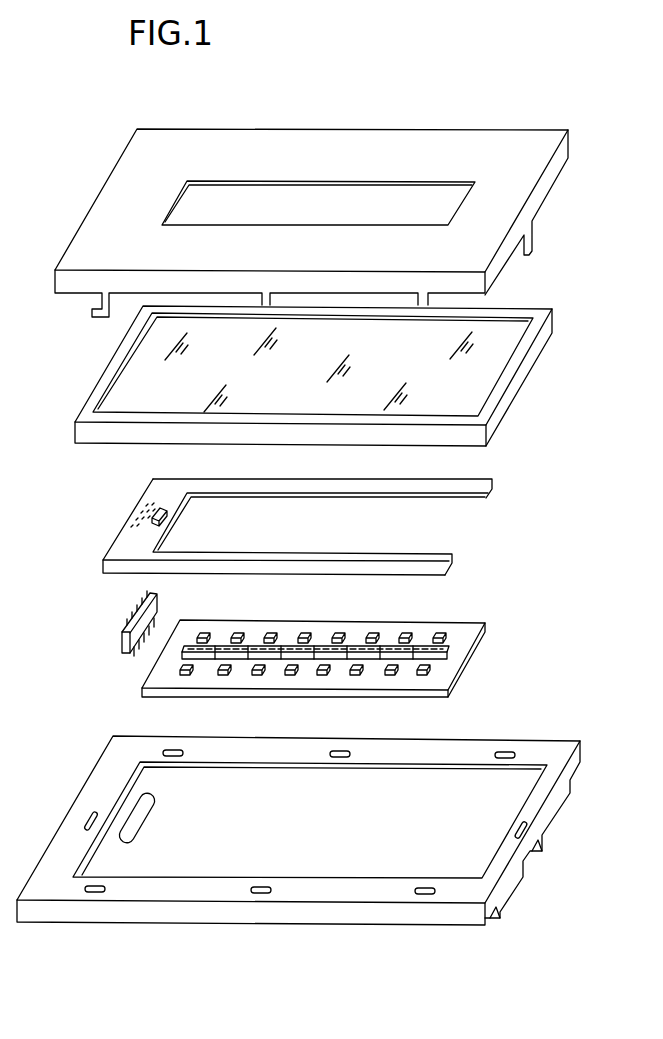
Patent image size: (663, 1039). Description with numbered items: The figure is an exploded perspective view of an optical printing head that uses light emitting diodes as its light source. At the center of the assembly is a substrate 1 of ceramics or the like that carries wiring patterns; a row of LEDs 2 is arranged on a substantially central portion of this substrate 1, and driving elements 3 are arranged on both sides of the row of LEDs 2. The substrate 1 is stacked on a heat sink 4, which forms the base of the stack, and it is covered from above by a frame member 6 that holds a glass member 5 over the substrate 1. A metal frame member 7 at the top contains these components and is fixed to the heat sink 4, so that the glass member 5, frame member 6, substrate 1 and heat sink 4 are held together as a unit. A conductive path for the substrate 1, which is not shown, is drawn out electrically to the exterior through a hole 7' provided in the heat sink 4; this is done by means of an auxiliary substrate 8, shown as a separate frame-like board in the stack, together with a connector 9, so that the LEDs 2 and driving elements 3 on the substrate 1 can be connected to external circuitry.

The substrate 1 is at (463, 647).
The LEDs 2 is at (207, 658).
The driving elements 3 is at (203, 632).
The heat sink 4 is at (555, 752).
The glass member 5 is at (488, 370).
The frame member 6 is at (503, 403).
The metal frame member 7 is at (319, 223).
The hole 7' is at (93, 804).
The auxiliary substrate 8 is at (492, 490).
The connector 9 is at (122, 643).